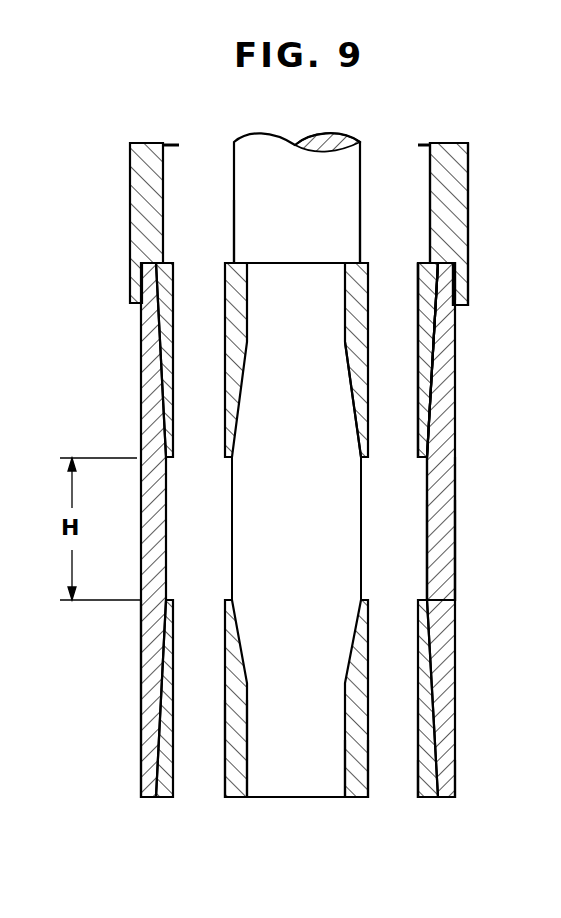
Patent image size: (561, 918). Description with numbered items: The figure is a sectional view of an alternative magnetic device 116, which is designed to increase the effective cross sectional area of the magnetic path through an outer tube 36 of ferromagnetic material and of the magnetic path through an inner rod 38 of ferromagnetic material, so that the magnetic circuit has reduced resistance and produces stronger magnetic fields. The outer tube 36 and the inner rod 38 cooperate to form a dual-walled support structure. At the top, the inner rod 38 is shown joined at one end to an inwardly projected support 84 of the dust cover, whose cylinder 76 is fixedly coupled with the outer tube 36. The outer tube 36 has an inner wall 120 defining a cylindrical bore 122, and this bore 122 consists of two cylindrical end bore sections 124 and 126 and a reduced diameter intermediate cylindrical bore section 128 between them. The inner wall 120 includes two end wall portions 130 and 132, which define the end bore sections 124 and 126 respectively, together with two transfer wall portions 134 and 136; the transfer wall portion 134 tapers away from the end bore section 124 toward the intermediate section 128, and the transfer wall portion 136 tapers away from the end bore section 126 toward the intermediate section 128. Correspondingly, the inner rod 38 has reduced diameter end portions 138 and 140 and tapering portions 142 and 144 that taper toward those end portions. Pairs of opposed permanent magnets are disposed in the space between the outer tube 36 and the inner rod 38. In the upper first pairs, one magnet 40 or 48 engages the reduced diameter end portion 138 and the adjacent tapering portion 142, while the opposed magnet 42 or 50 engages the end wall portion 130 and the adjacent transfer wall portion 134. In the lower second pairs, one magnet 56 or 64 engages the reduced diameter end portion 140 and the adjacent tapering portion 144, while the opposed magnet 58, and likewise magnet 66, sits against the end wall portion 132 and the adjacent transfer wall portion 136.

The magnetic device 116 is at (482, 150).
The inwardly projected support 84 is at (348, 177).
The cylinder 76 is at (455, 190).
The reduced diameter end portion 138 is at (316, 280).
The cylindrical end bore section 124 is at (410, 265).
The permanent magnet 50 is at (152, 322).
The permanent magnet 48 is at (233, 318).
The permanent magnet 42 is at (418, 338).
The permanent magnet 40 is at (355, 340).
The end wall portion 130 is at (434, 328).
The reduced diameter intermediate cylindrical bore section 128 is at (185, 525).
The transfer wall portion 134 is at (428, 432).
The tapering portion 142 is at (352, 440).
The inner rod 38 is at (246, 490).
The outer tube 36 is at (440, 495).
The inner wall 120 is at (425, 510).
The cylindrical bore 122 is at (405, 553).
The tapering portion 144 is at (250, 634).
The transfer wall portion 136 is at (430, 660).
The permanent magnet 58 is at (435, 742).
The permanent magnet 66 is at (152, 740).
The permanent magnet 64 is at (236, 746).
The end wall portion 132 is at (430, 770).
The reduced diameter end portion 140 is at (318, 781).
The permanent magnet 56 is at (345, 776).
The cylindrical end bore section 126 is at (400, 765).